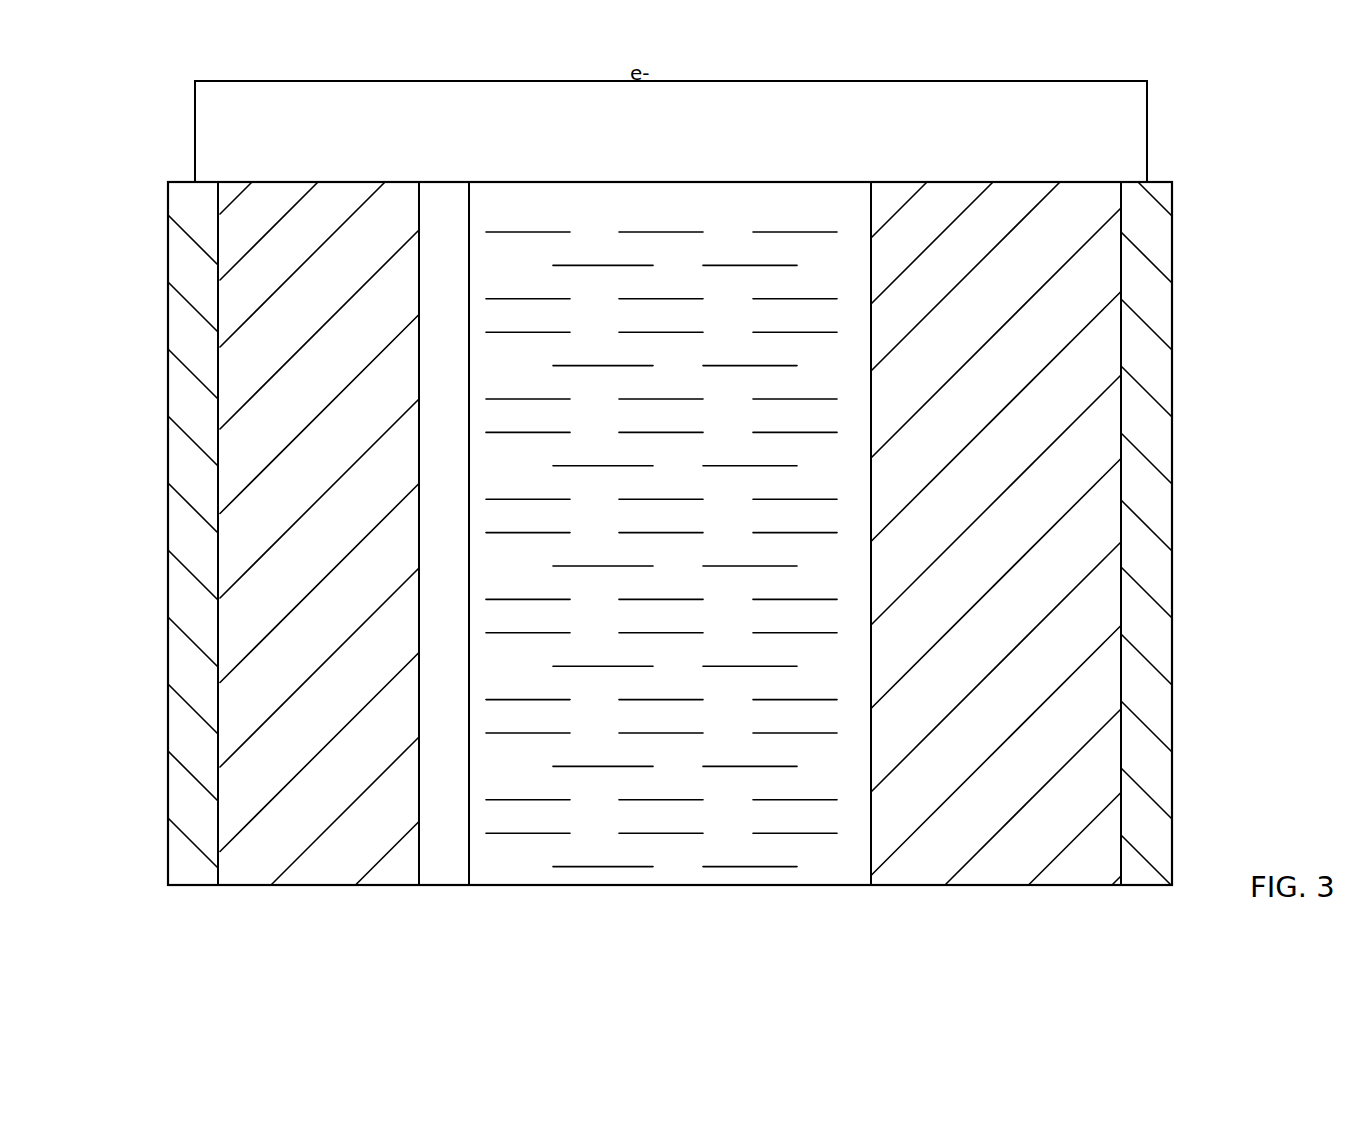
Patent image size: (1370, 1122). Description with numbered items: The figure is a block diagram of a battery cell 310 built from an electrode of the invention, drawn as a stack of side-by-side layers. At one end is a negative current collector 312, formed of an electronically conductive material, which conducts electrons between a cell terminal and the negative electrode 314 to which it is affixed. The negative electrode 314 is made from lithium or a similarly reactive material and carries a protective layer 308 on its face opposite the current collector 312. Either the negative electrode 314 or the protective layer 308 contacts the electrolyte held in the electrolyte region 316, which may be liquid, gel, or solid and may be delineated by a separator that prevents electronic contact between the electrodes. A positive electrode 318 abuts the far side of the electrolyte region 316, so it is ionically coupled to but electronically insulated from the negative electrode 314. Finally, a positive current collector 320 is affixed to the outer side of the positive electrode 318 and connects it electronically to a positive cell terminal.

The cell 310 is at (1228, 138).
The negative current collector 312 is at (186, 598).
The negative electrode 314 is at (313, 870).
The protective layer 308 is at (449, 868).
The electrolyte region 316 is at (675, 865).
The positive electrode 318 is at (1000, 868).
The positive current collector 320 is at (1162, 645).